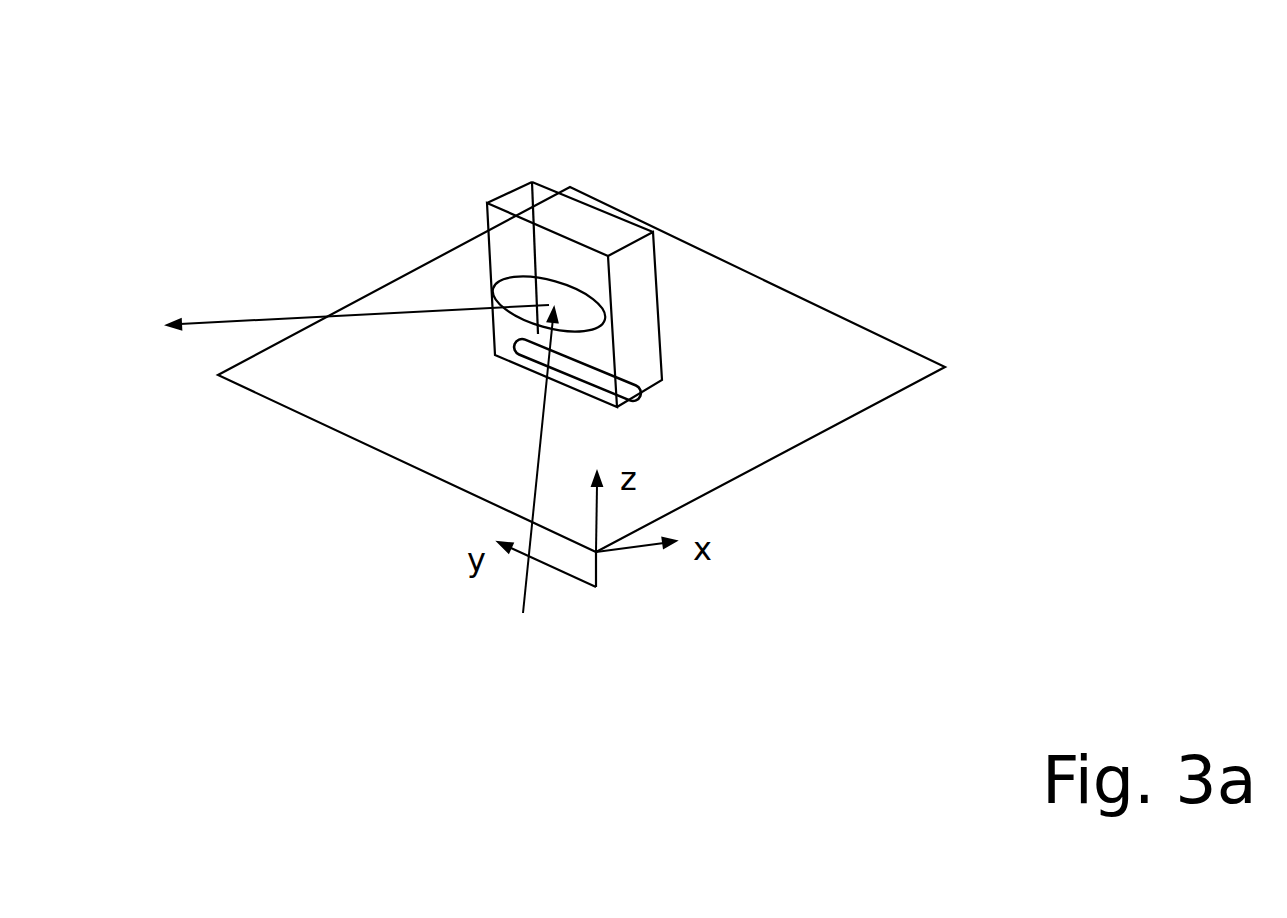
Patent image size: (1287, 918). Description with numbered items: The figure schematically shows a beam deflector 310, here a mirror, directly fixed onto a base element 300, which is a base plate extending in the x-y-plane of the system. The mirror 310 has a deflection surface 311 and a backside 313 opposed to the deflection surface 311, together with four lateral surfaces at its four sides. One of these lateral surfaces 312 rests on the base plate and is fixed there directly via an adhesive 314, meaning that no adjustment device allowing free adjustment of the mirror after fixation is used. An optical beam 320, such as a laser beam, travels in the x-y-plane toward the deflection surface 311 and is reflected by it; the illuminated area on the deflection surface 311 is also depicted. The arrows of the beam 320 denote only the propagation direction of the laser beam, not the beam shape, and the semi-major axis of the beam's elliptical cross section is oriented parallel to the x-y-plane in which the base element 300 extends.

The base element 300 is at (905, 364).
The beam deflector 310 is at (573, 241).
The deflection surface 311 is at (470, 232).
The lateral surface 312 is at (493, 372).
The backside 313 is at (675, 277).
The adhesive 314 is at (625, 393).
The optical beam 320 is at (211, 323).